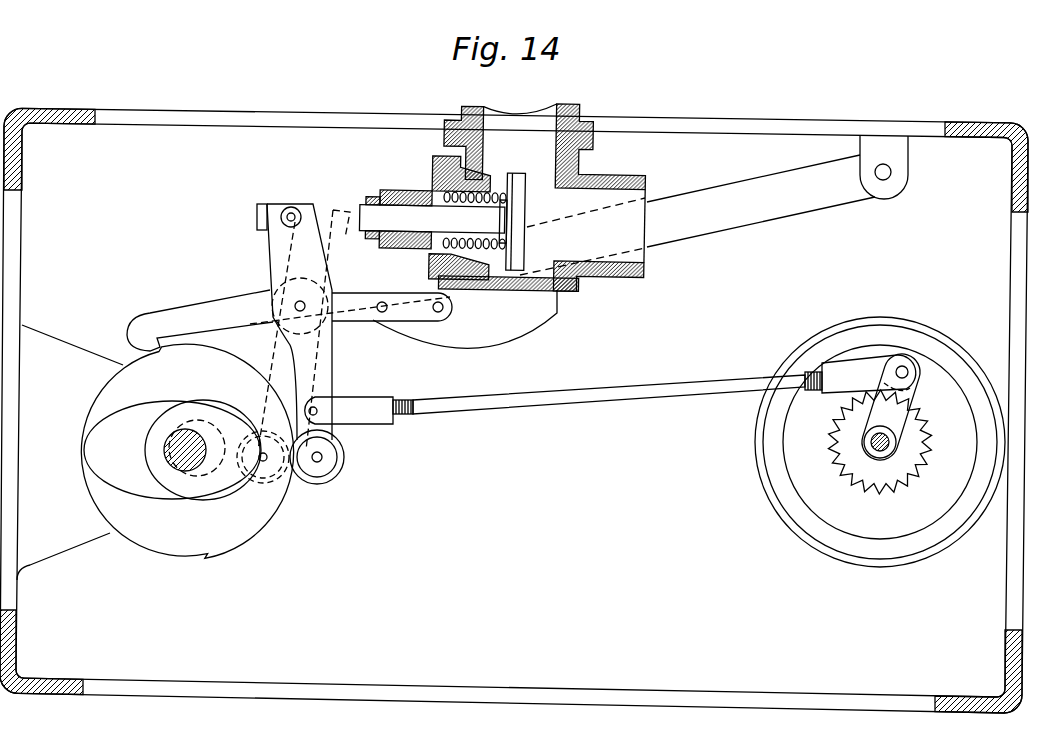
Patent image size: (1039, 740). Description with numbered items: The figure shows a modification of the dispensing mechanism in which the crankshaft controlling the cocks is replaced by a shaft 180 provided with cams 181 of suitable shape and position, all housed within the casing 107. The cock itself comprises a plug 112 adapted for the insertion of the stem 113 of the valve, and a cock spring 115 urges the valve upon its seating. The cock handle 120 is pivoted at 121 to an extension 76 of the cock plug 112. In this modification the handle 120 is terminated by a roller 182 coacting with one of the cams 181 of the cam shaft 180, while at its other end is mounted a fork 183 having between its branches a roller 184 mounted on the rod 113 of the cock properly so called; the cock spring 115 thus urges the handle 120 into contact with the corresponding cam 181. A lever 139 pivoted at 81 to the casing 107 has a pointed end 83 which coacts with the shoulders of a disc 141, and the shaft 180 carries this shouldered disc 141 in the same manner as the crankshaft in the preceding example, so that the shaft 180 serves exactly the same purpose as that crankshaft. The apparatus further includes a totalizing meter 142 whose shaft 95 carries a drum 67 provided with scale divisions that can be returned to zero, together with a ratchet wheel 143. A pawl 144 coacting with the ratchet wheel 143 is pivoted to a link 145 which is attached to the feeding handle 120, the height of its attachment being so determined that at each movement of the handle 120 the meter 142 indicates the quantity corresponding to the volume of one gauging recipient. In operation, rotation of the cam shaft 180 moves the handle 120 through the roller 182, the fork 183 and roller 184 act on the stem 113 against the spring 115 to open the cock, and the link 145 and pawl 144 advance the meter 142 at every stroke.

The drum 67 is at (888, 560).
The extension 76 is at (420, 313).
The pivot 81 is at (886, 178).
The pointed end 83 is at (145, 343).
The shaft 95 is at (897, 455).
The casing 107 is at (993, 140).
The plug 112 is at (416, 186).
The stem 113 is at (372, 213).
The spring 115 is at (495, 192).
The cock handle 120 is at (325, 375).
The pivot 121 is at (296, 303).
The lever 139 is at (737, 215).
The disc 141 is at (123, 538).
The totalizing meter 142 is at (907, 533).
The ratchet wheel 143 is at (884, 483).
The pawl 144 is at (922, 377).
The link 145 is at (480, 449).
The shaft 180 is at (185, 462).
The cam 181 is at (110, 470).
The roller 182 is at (313, 478).
The fork 183 is at (268, 213).
The roller 184 is at (310, 190).